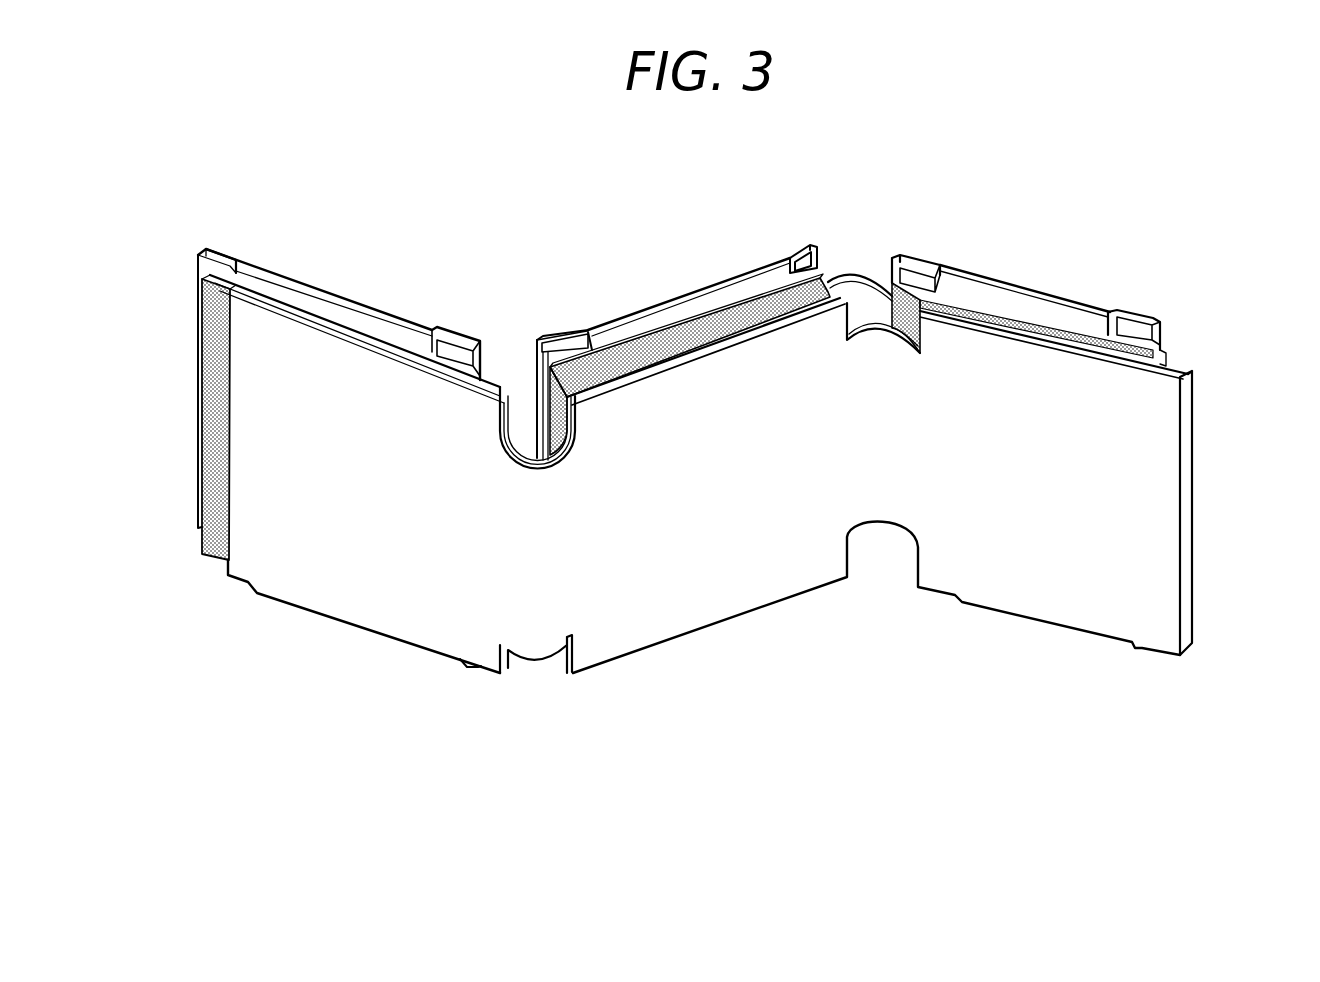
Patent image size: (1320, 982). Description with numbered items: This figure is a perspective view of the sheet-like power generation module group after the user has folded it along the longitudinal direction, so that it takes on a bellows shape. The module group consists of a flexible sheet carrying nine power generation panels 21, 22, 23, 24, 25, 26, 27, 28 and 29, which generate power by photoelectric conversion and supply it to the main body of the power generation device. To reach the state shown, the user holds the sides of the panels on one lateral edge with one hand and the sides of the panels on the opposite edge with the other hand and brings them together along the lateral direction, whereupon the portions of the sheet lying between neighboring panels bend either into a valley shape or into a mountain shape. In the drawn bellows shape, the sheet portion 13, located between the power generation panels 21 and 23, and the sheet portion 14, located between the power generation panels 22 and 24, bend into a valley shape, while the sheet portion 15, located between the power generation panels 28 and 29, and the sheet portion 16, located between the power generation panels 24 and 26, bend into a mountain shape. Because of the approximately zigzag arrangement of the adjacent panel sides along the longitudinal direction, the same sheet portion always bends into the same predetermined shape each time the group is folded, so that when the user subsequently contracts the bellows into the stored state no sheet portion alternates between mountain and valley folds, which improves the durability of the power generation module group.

The sheet portion 13 is at (535, 598).
The sheet portion 14 is at (522, 445).
The sheet portion 15 is at (837, 290).
The sheet portion 16 is at (868, 313).
The power generation panel 21 is at (490, 386).
The power generation panel 22 is at (208, 458).
The power generation panel 23 is at (565, 664).
The power generation panel 24 is at (648, 347).
The power generation panel 25 is at (1188, 468).
The power generation panel 26 is at (913, 280).
The power generation panel 27 is at (227, 257).
The power generation panel 28 is at (553, 338).
The power generation panel 29 is at (1132, 313).